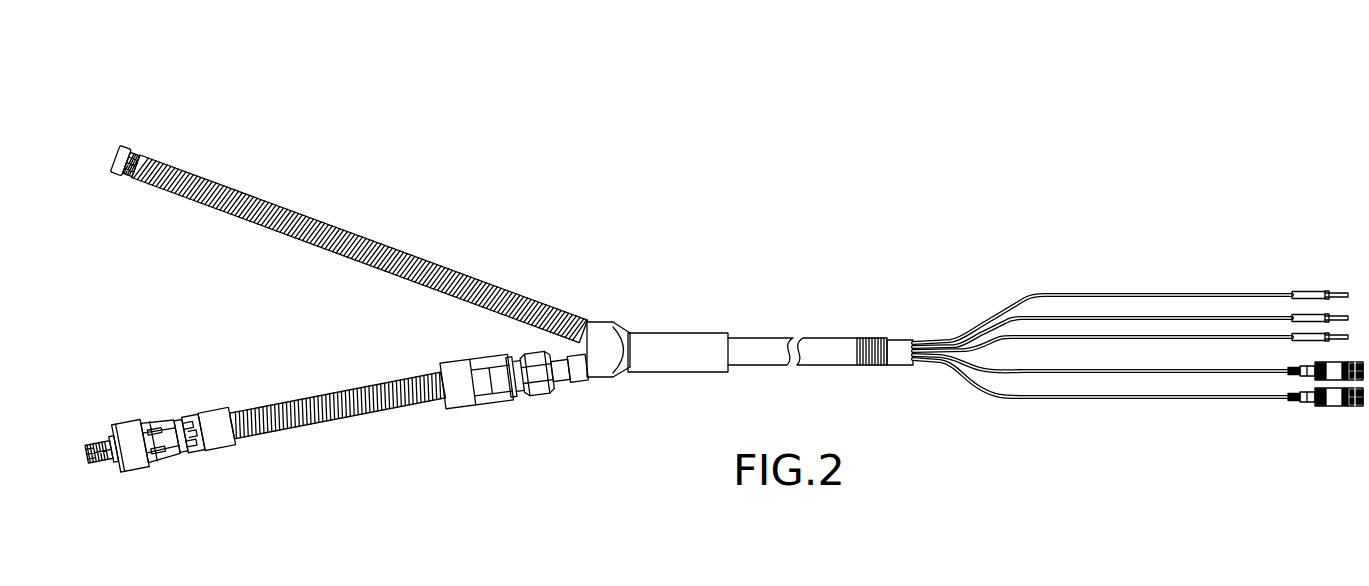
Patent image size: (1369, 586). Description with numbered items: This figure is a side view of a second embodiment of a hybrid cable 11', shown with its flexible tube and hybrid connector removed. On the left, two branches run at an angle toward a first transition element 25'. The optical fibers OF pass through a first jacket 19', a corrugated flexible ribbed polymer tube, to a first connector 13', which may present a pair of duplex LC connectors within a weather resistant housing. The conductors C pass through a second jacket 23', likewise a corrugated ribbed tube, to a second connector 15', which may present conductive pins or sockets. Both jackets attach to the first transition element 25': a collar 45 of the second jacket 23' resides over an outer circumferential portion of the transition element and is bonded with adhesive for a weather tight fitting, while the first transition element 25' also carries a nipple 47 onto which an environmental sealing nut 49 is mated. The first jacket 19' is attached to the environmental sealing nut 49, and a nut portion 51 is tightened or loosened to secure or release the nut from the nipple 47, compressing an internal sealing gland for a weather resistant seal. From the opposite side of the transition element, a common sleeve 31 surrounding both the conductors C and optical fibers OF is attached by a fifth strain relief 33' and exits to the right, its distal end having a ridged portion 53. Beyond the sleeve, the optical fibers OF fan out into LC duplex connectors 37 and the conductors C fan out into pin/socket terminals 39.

The hybrid cable 11' is at (722, 298).
The first connector 13' is at (173, 481).
The second connector 15' is at (162, 116).
The first jacket 19' is at (344, 437).
The second jacket 23' is at (373, 214).
The first transition element 25' is at (647, 307).
The common sleeve 31 is at (762, 347).
The fifth strain relief 33' is at (678, 382).
The LC duplex connectors 37 is at (1339, 416).
The pin/socket terminals 39 is at (1328, 295).
The collar 45 is at (590, 320).
The nipple 47 is at (562, 372).
The environmental sealing nut 49 is at (513, 428).
The nut portion 51 is at (537, 392).
The ridged portion 53 is at (871, 324).
The conductors C is at (1097, 295).
The optical fibers OF is at (1113, 398).